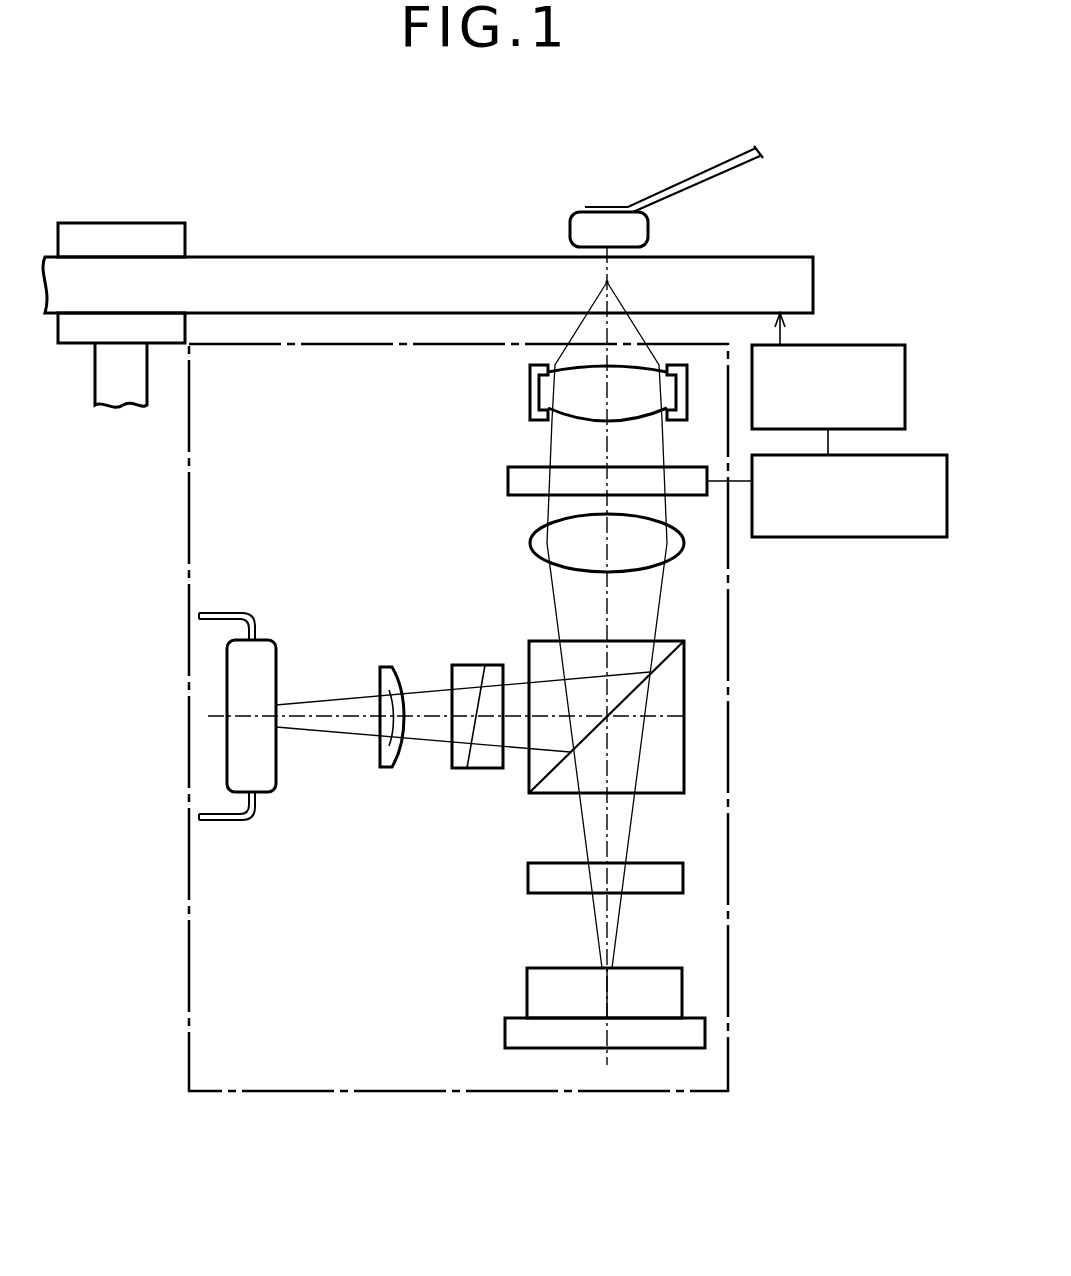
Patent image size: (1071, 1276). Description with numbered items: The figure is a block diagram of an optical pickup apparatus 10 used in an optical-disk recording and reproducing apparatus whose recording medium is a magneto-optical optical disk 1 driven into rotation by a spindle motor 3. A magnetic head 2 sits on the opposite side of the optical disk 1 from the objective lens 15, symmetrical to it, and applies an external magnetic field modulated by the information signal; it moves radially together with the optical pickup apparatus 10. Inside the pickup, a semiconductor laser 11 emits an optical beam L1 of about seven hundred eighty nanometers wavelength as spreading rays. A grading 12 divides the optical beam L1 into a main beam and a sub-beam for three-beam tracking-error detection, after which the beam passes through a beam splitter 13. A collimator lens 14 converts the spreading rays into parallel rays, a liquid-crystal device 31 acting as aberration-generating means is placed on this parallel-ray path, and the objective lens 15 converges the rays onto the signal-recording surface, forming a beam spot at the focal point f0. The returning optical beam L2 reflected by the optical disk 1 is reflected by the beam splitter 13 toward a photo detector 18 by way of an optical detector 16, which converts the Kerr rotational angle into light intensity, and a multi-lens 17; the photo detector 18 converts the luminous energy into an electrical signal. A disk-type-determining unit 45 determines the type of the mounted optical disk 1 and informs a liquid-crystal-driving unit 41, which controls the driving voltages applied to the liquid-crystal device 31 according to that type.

The optical disk 1 is at (784, 268).
The magnetic head 2 is at (571, 228).
The spindle motor 3 is at (70, 343).
The optical pickup apparatus 10 is at (251, 1092).
The semiconductor laser 11 is at (527, 985).
The grading 12 is at (527, 877).
The beam splitter 13 is at (658, 780).
The collimator lens 14 is at (531, 543).
The objective lens 15 is at (529, 392).
The optical detector 16 is at (467, 662).
The multi-lens 17 is at (387, 662).
The photo detector 18 is at (272, 654).
The liquid-crystal device 31 is at (508, 481).
The liquid-crystal-driving unit 41 is at (902, 540).
The disk-type-determining unit 45 is at (882, 345).
The focal point f0 is at (610, 282).
The optical beam L1 is at (578, 829).
The returning optical beam L2 is at (319, 732).